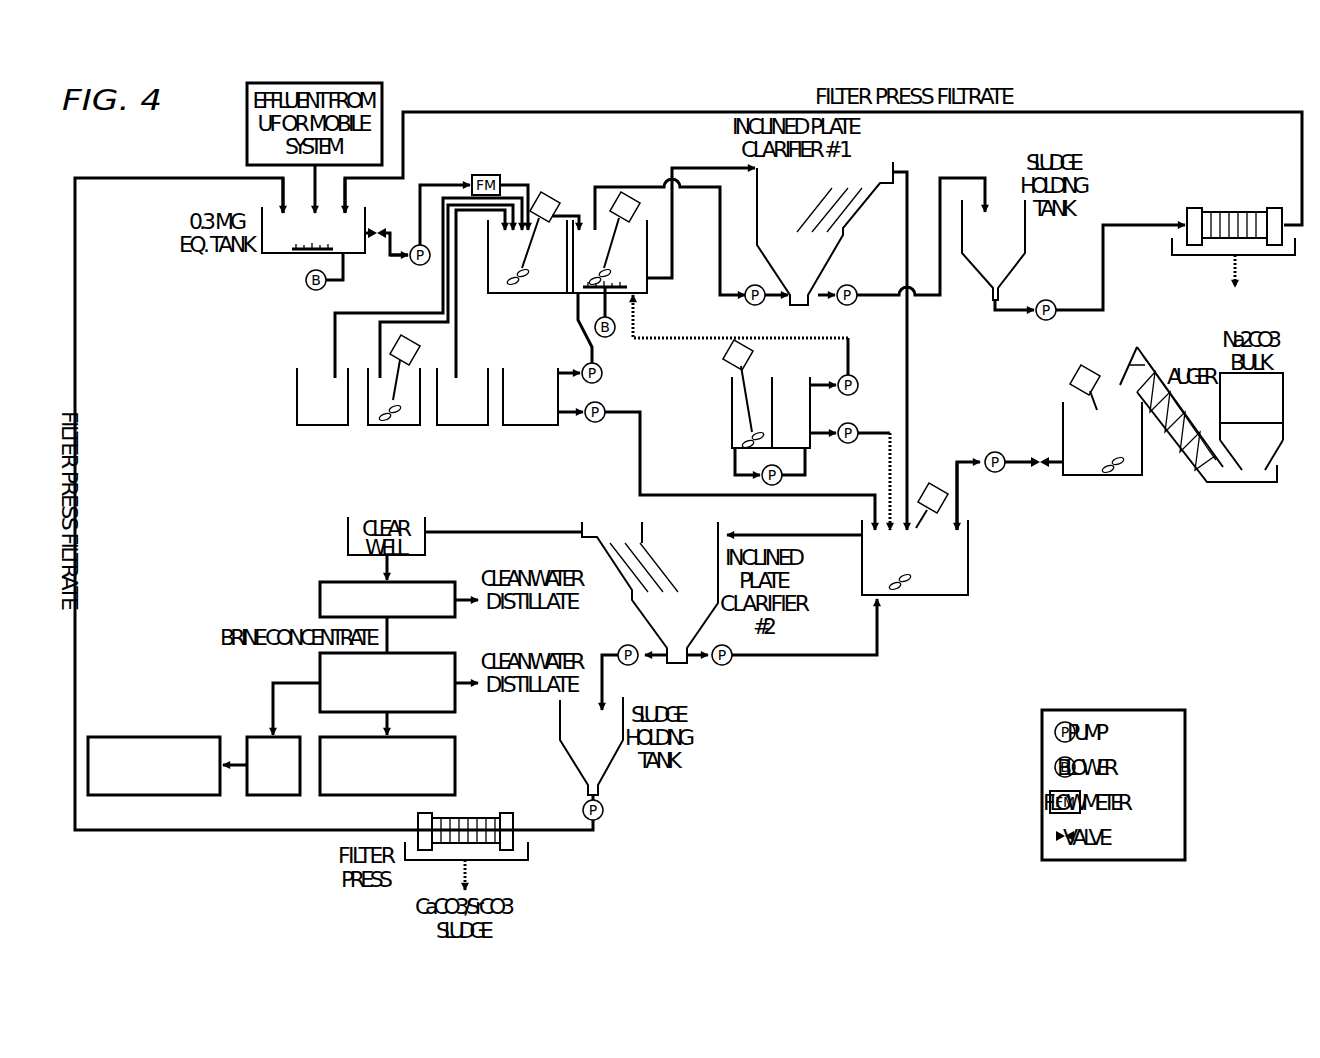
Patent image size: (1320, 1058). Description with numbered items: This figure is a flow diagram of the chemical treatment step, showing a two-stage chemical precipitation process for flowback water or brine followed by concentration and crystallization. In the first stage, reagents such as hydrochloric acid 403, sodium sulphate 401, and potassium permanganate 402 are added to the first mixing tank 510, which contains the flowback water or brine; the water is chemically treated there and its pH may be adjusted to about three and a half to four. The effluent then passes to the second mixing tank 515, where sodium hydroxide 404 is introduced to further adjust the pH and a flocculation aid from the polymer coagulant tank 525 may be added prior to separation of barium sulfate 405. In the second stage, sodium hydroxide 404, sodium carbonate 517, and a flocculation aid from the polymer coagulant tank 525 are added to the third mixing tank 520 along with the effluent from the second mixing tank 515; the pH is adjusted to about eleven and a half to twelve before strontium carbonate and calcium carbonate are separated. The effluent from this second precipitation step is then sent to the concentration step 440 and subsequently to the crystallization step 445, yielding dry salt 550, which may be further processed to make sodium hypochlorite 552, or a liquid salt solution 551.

The sodium sulphate 401 is at (322, 428).
The potassium permanganate 402 is at (393, 428).
The hydrochloric acid 403 is at (462, 428).
The sodium hydroxide 404 is at (530, 428).
The barium sulfate 405 is at (1232, 212).
The concentration step 440 is at (318, 600).
The crystallization step 445 is at (318, 672).
The mixing tank #1 510 is at (525, 297).
The mixing tank #2 515 is at (648, 295).
The sodium carbonate 517 is at (1100, 478).
The mixing tank #3 520 is at (935, 597).
The polymer coagulant tank 525 is at (730, 434).
The dry salt 550 is at (260, 736).
The liquid salt solution 551 is at (456, 768).
The sodium hypochlorite 552 is at (140, 736).